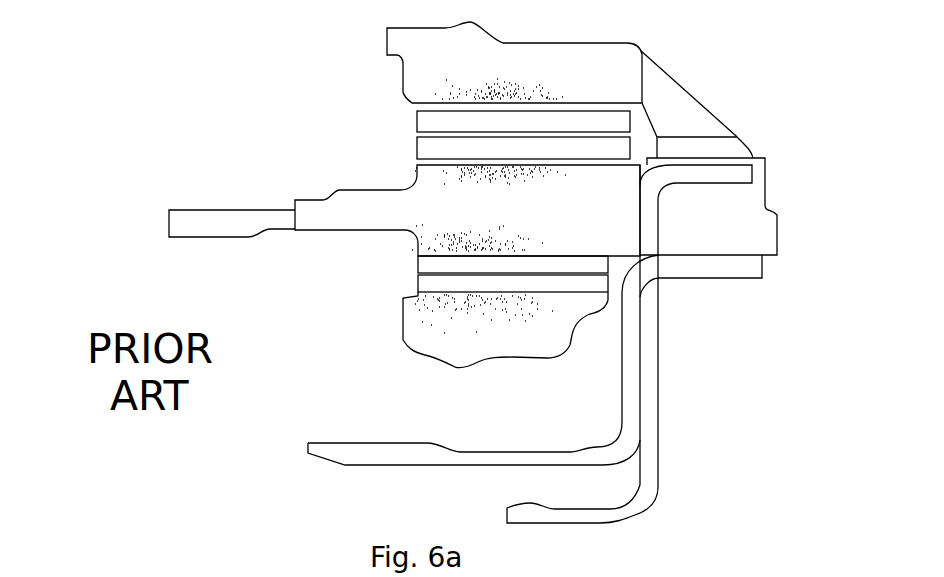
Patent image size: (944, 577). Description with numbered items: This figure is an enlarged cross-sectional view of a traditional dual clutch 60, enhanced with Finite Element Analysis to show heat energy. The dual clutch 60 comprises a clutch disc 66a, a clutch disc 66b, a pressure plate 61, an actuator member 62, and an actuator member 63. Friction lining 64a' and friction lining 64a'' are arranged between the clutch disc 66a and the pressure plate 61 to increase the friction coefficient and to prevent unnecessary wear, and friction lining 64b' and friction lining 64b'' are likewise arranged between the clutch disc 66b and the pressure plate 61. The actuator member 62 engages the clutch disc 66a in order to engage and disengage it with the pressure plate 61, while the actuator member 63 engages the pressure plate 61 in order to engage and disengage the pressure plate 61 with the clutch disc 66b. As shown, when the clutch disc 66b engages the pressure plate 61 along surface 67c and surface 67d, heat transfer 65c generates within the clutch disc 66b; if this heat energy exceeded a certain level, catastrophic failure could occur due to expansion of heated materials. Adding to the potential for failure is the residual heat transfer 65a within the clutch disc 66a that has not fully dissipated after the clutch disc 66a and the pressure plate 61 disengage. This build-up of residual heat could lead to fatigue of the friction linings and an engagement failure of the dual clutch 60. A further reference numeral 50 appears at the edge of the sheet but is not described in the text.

The dual clutch 60 is at (223, 97).
The clutch disc 66a is at (384, 68).
The heat transfer 65a is at (490, 91).
The friction lining 64a' is at (463, 108).
The friction lining 64a'' is at (466, 135).
The surface 67c is at (497, 273).
The friction lining 64b' is at (451, 277).
The friction lining 64b'' is at (451, 300).
The clutch disc 66b is at (400, 342).
The heat transfer 65c is at (481, 313).
The surface 67d is at (533, 273).
The pressure plate 61 is at (778, 200).
The actuator member 62 is at (664, 470).
The actuator member 63 is at (331, 462).
The circuit board 50 is at (758, 576).